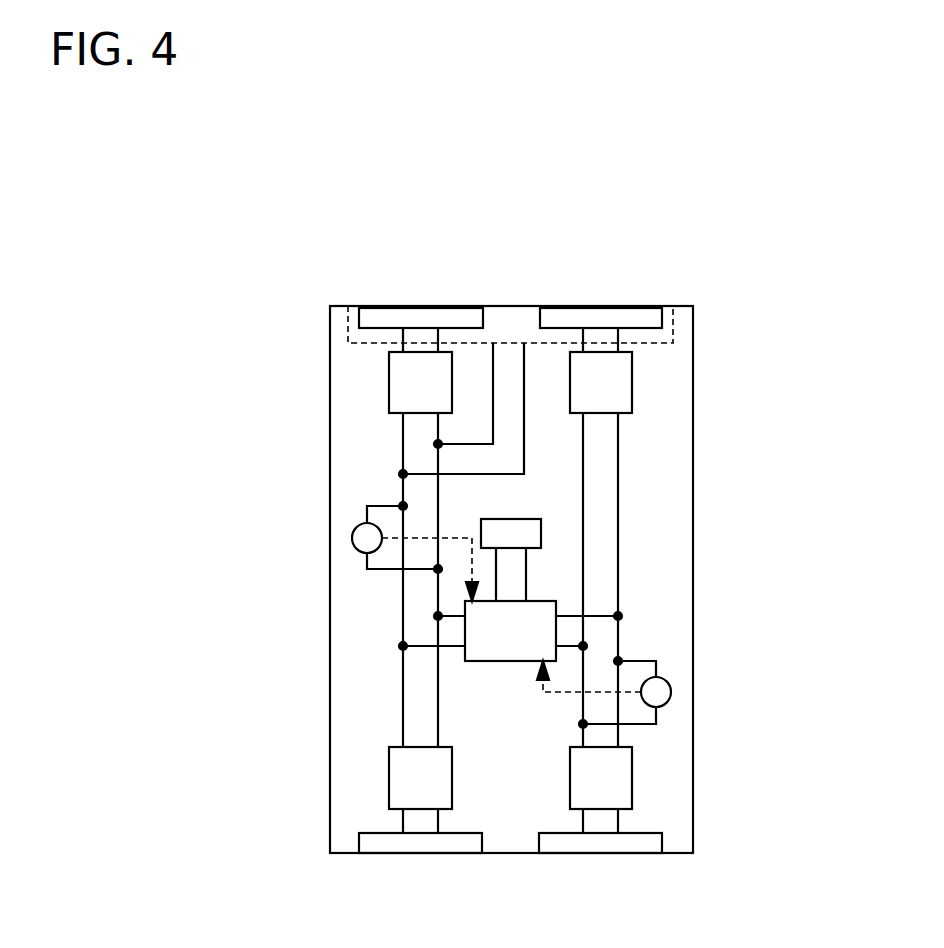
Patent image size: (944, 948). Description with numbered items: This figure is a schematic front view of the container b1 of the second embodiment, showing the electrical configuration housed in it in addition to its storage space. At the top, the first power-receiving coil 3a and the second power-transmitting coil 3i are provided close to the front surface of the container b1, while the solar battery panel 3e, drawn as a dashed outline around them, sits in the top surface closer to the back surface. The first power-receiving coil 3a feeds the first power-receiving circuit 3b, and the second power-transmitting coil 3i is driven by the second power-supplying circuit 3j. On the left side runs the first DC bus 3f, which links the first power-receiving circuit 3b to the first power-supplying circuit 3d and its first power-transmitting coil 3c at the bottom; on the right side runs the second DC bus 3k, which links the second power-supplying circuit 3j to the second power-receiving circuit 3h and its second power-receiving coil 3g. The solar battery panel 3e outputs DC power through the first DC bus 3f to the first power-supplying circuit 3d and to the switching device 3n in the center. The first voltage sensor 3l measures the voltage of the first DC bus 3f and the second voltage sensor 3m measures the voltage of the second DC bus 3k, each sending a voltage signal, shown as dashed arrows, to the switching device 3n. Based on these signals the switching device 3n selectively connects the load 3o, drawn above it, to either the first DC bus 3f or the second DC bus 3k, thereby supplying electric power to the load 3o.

The container b1 is at (748, 252).
The first power-receiving coil 3a is at (493, 308).
The second power-transmitting coil 3i is at (672, 308).
The first power-transmitting coil 3c is at (360, 843).
The second power-receiving coil 3g is at (540, 843).
The solar battery panel 3e is at (360, 344).
The first power-receiving circuit 3b is at (389, 382).
The second power-supplying circuit 3j is at (632, 377).
The first power-supplying circuit 3d is at (389, 775).
The second power-receiving circuit 3h is at (632, 770).
The first DC bus 3f is at (403, 607).
The second DC bus 3k is at (618, 468).
The first voltage sensor 3l is at (352, 537).
The second voltage sensor 3m is at (671, 692).
The load 3o is at (520, 519).
The switching device 3n is at (510, 661).